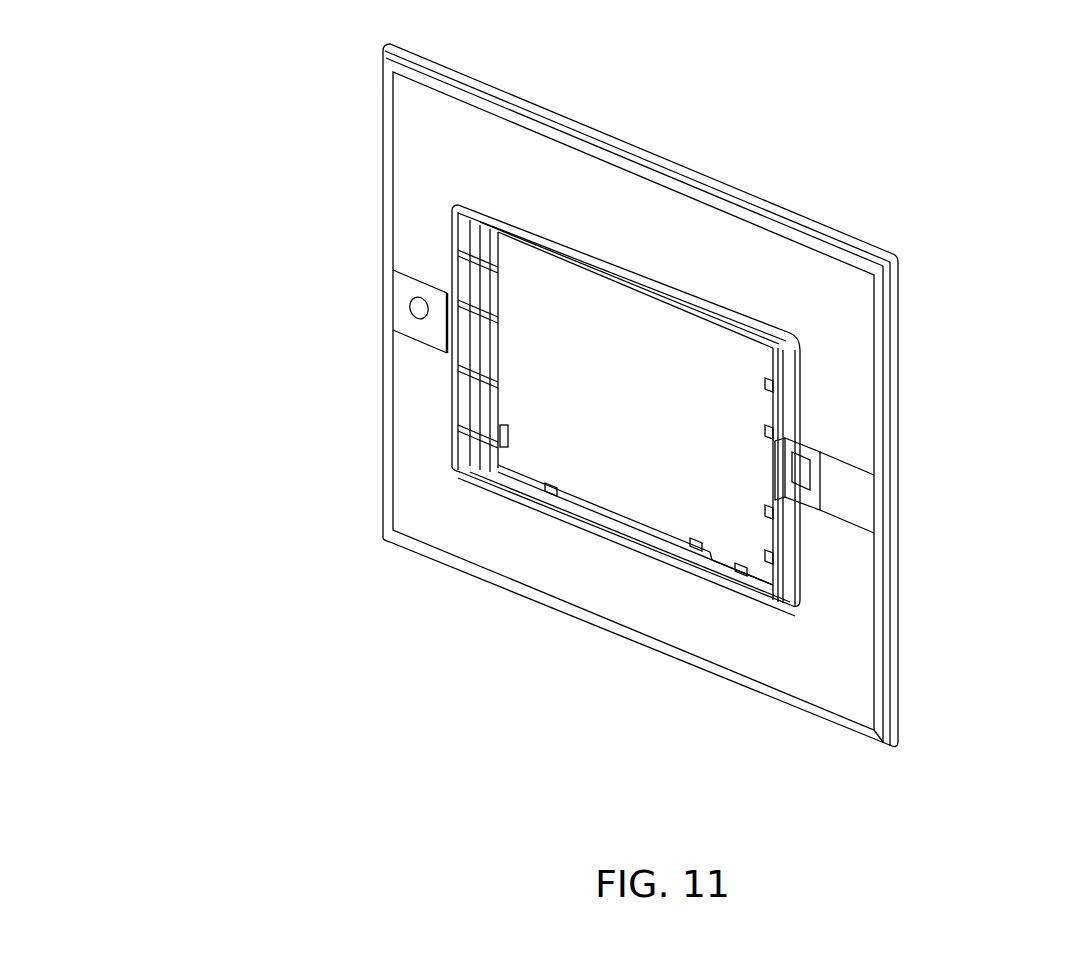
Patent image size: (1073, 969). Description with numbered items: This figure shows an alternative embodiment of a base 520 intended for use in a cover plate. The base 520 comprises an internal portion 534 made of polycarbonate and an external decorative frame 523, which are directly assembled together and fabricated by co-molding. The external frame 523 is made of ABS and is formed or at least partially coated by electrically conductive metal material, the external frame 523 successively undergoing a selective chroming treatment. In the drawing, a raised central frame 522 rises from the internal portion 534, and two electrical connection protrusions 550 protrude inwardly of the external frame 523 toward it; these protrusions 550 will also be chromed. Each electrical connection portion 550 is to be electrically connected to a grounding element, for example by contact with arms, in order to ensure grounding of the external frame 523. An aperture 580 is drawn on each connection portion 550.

The base 520 is at (240, 84).
The external decorative frame 523 is at (905, 322).
The internal portion 534 is at (405, 110).
The raised frame 522 is at (572, 490).
The electrical connection portion 550 is at (395, 272).
The tab aperture 580 is at (465, 332).